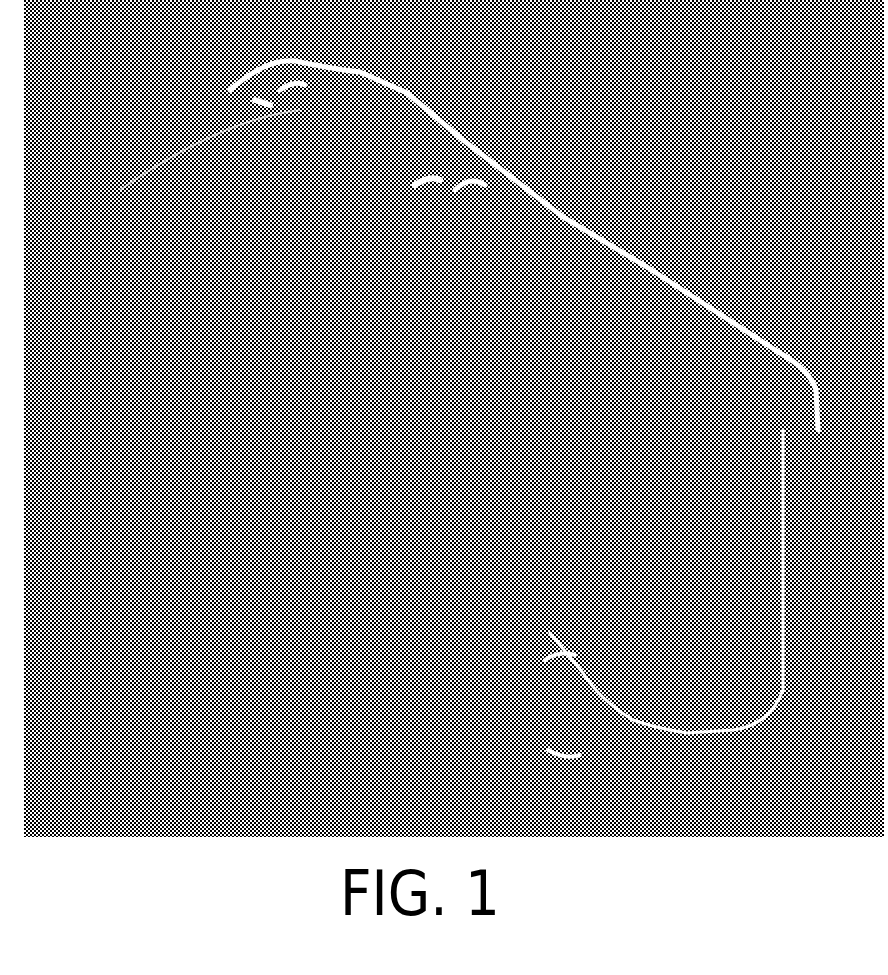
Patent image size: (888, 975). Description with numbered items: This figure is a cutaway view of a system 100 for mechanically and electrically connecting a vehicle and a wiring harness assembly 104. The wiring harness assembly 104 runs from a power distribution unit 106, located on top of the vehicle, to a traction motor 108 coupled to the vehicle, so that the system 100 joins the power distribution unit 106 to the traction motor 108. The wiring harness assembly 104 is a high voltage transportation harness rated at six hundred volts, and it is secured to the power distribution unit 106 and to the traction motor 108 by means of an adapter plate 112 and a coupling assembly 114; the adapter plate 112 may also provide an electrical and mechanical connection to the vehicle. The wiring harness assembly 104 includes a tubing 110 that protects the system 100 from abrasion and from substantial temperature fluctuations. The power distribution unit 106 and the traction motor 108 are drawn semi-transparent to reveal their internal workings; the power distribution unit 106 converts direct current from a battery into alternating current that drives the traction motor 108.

The system 100 is at (653, 182).
The wiring harness assembly 104 is at (657, 290).
The power distribution unit 106 is at (172, 307).
The traction motor 108 is at (657, 618).
The tubing 110 is at (657, 270).
The adapter plate 112 is at (270, 108).
The coupling assembly 114 is at (288, 84).